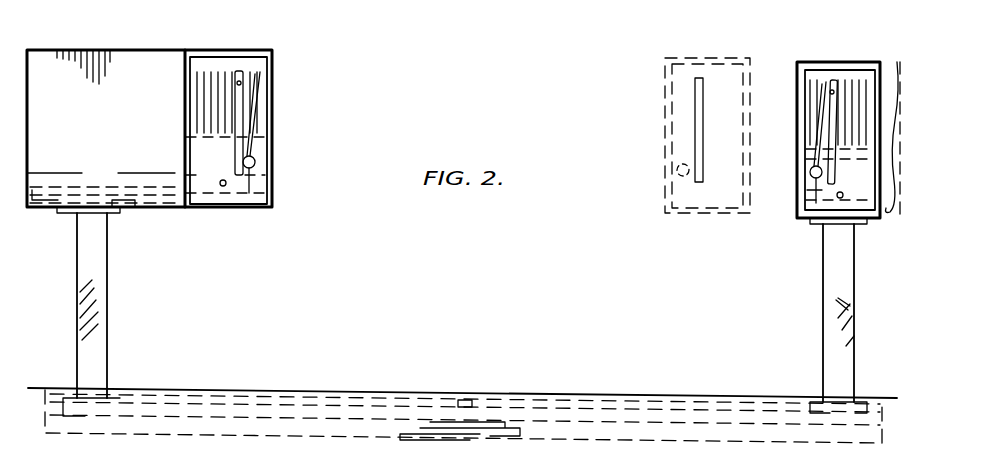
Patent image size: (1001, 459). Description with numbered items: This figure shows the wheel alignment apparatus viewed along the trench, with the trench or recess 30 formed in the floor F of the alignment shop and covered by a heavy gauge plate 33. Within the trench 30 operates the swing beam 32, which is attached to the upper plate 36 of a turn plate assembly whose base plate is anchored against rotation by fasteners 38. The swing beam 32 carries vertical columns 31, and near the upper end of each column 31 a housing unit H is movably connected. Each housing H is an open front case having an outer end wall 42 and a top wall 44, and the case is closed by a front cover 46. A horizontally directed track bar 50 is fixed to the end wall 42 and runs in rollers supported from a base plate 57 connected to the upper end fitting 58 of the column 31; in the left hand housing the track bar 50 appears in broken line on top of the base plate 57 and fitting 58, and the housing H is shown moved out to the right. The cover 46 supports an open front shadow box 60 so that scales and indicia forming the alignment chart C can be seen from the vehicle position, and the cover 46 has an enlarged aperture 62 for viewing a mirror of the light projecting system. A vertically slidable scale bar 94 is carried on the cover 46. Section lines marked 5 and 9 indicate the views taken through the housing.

The trench 30 is at (232, 436).
The column 31 is at (104, 313).
The swing beam 32 is at (300, 412).
The heavy gauge plate 33 is at (577, 395).
The upper plate 36 is at (487, 425).
The fasteners 38 is at (398, 436).
The outer end wall 42 is at (28, 52).
The top wall 44 is at (78, 48).
The front cover 46 is at (896, 62).
The track bar 50 is at (92, 188).
The base plate 57 is at (134, 203).
The upper end fitting 58 is at (62, 214).
The shadow box 60 is at (237, 52).
The aperture 62 is at (256, 160).
The scale bar 94 is at (240, 103).
The alignment chart C is at (264, 127).
The housing unit H is at (147, 49).
The floor F is at (188, 388).
The section line 5 is at (40, 173).
The section line 9 is at (222, 69).